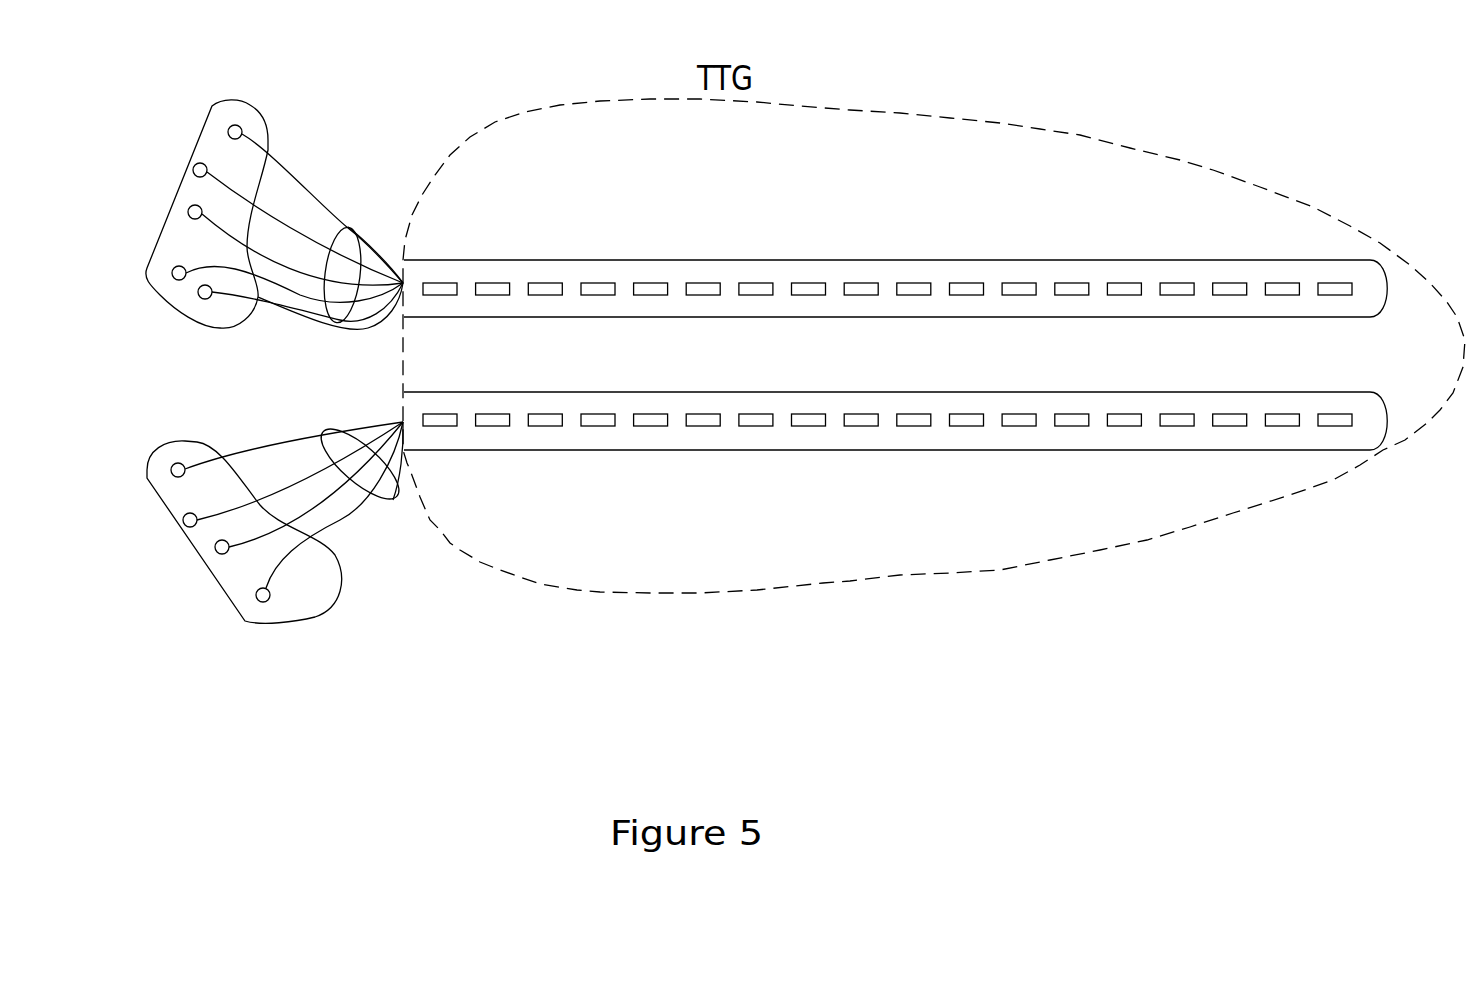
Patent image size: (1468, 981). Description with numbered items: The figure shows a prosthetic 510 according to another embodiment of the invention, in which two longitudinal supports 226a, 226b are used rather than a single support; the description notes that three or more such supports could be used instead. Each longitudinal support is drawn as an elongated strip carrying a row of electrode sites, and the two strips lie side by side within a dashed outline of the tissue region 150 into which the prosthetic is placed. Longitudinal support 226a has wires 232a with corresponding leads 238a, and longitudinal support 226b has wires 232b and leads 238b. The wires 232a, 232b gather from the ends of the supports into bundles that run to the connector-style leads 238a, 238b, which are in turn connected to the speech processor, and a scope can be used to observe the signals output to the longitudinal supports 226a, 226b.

The transverse temporal gyrus 150 is at (1147, 540).
The prosthetic 510 is at (1136, 84).
The longitudinal support 226a is at (888, 261).
The longitudinal support 226b is at (883, 450).
The wires 232a is at (352, 227).
The wires 232b is at (327, 432).
The leads 238a is at (258, 112).
The leads 238b is at (177, 440).